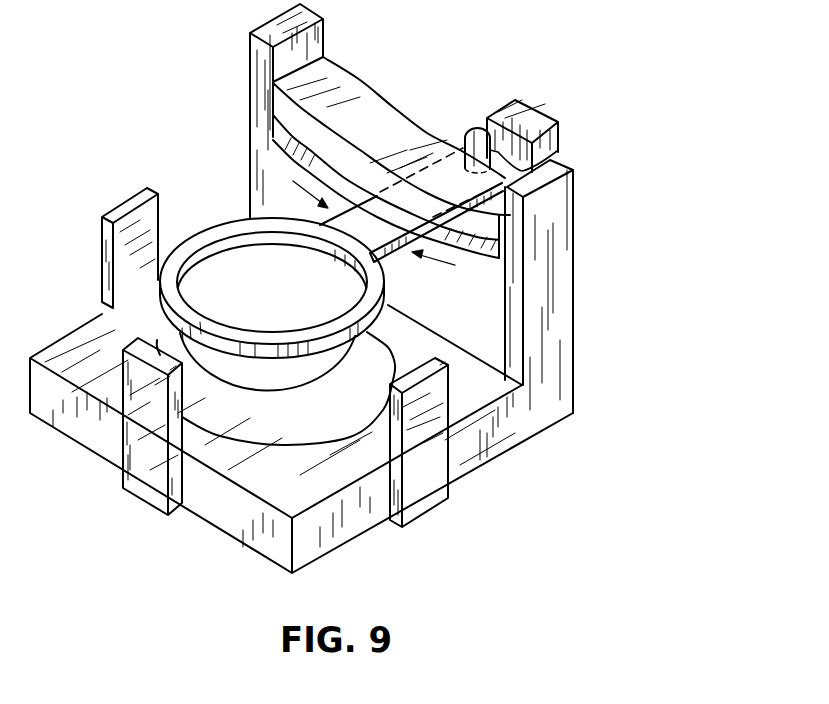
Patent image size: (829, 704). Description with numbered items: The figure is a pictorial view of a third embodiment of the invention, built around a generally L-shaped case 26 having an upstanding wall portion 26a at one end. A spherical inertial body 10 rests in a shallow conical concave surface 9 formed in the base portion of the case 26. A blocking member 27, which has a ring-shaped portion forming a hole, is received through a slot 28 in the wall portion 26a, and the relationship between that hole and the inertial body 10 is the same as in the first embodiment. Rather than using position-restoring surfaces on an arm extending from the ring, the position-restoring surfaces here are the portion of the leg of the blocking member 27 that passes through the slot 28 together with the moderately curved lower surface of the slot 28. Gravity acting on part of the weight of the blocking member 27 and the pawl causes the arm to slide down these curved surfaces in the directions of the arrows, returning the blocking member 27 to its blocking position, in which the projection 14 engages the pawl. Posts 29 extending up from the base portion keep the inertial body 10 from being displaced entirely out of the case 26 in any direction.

The shallow conical concave surface 9 is at (328, 422).
The spherical inertial body 10 is at (258, 408).
The projection 14 is at (476, 130).
The case 26 is at (502, 438).
The wall portion 26a is at (563, 245).
The blocking member 27 is at (352, 235).
The slot 28 is at (483, 248).
The posts 29 is at (125, 228).